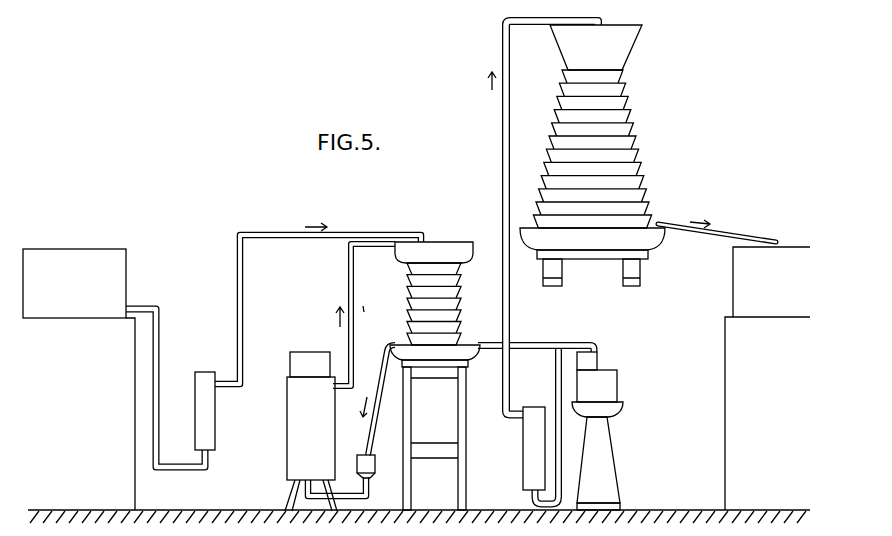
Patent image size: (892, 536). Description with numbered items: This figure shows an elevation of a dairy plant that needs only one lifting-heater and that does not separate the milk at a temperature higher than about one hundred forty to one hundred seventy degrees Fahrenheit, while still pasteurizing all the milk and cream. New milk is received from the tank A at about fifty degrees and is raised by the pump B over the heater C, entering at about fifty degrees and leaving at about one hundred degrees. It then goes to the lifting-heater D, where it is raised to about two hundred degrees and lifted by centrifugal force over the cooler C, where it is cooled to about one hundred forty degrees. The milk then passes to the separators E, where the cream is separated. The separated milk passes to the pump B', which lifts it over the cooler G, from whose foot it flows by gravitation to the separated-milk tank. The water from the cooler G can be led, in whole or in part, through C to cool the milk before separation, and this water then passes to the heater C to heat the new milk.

The tank A is at (79, 379).
The pump B is at (218, 411).
The pump B' is at (522, 448).
The heater C is at (435, 375).
The lifting-heater D is at (330, 431).
The separators E is at (597, 431).
The cooler G is at (592, 155).